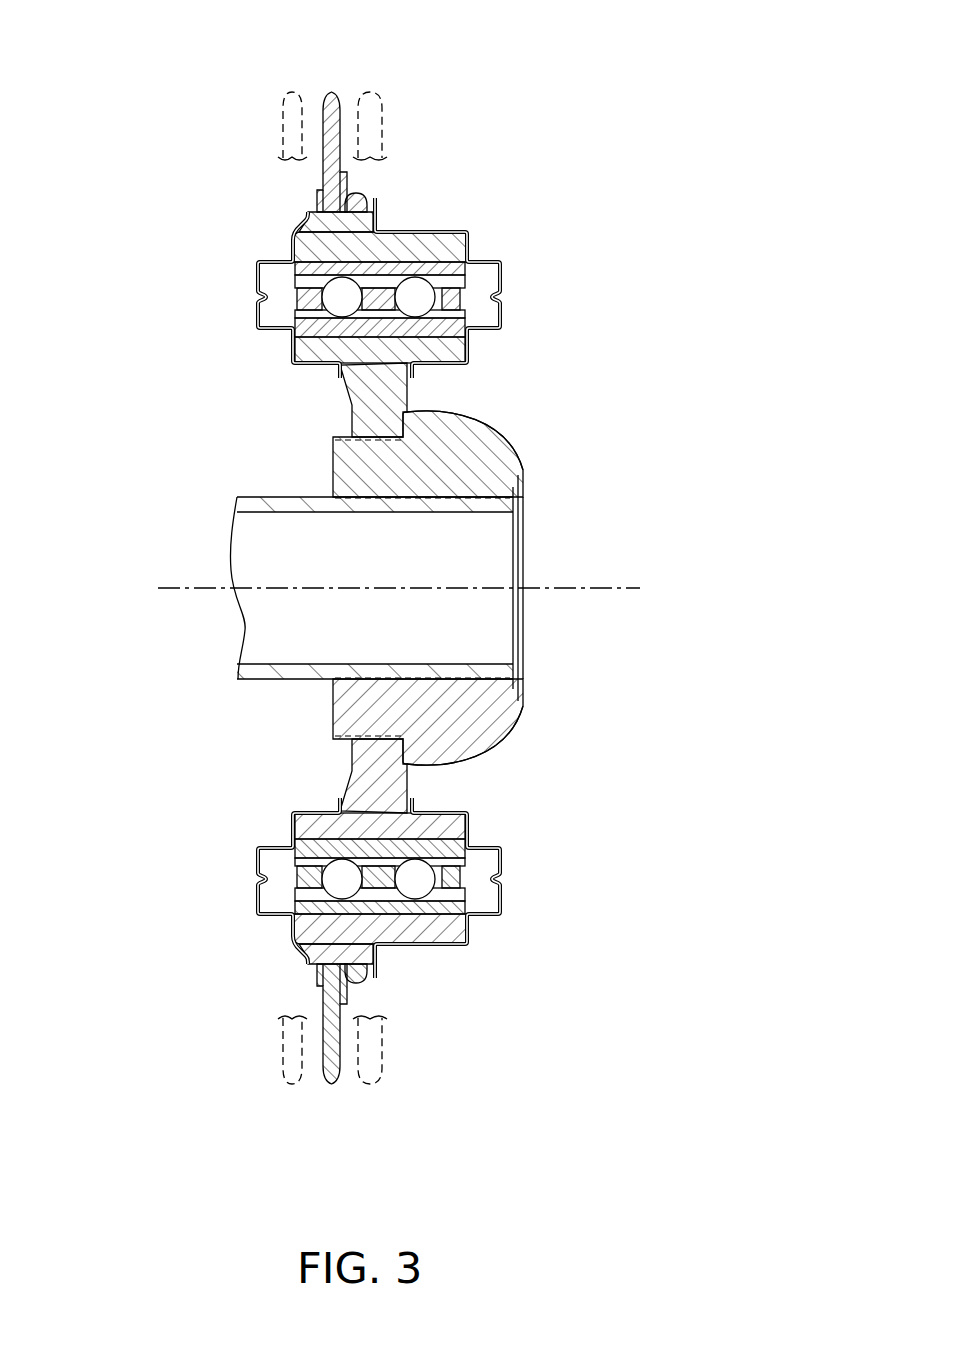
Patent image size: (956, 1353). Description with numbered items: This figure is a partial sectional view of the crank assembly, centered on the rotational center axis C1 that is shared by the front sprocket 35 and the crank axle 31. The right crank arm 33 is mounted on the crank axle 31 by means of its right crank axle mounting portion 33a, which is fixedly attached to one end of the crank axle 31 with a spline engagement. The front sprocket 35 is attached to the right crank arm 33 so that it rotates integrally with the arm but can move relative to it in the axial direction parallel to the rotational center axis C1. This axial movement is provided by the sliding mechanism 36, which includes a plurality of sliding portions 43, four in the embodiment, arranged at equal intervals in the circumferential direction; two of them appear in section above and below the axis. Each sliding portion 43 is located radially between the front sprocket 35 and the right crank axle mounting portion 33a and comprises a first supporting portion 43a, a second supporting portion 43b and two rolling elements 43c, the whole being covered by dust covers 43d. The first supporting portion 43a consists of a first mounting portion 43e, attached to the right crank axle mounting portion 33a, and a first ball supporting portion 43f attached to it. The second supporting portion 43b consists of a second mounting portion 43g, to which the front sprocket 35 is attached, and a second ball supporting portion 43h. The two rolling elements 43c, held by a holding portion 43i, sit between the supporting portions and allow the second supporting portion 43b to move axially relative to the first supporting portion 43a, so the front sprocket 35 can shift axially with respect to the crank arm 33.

The crank axle 31 is at (290, 647).
The right crank arm 33 is at (473, 588).
The right crank axle mounting portion 33a is at (462, 427).
The front sprocket 35 is at (352, 68).
The sliding mechanism 36 is at (545, 212).
The sliding portion 43 is at (345, 591).
The first supporting portion 43a is at (273, 588).
The second supporting portion 43b is at (274, 590).
The rolling element 43c is at (300, 288).
The dust cover 43d is at (262, 313).
The first mounting portion 43e is at (360, 393).
The first ball supporting portion 43f is at (297, 350).
The second mounting portion 43g is at (297, 240).
The second ball supporting portion 43h is at (297, 258).
The holding portion 43i is at (458, 300).
The rotational center axis C1 is at (390, 587).